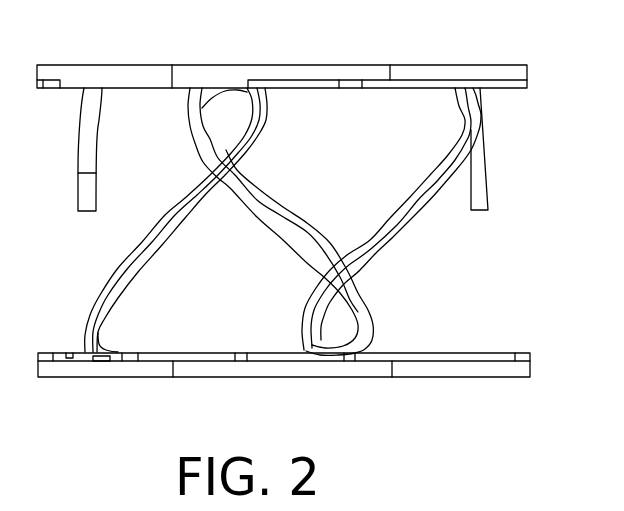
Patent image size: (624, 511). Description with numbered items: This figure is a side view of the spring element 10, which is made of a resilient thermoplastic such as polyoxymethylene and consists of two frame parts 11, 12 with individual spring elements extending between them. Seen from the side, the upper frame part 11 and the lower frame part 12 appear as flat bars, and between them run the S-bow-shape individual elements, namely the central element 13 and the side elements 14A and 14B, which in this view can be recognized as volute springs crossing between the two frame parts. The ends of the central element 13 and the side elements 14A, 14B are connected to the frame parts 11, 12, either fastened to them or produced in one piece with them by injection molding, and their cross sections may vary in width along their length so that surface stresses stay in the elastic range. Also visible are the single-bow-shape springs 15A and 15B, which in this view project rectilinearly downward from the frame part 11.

The spring element 10 is at (72, 243).
The frame part 11 is at (104, 78).
The frame part 12 is at (131, 368).
The central element 13 is at (252, 203).
The side element 14A is at (96, 322).
The side element 14B is at (376, 241).
The single-bow-shape spring 15A is at (87, 133).
The single-bow-shape spring 15B is at (482, 182).